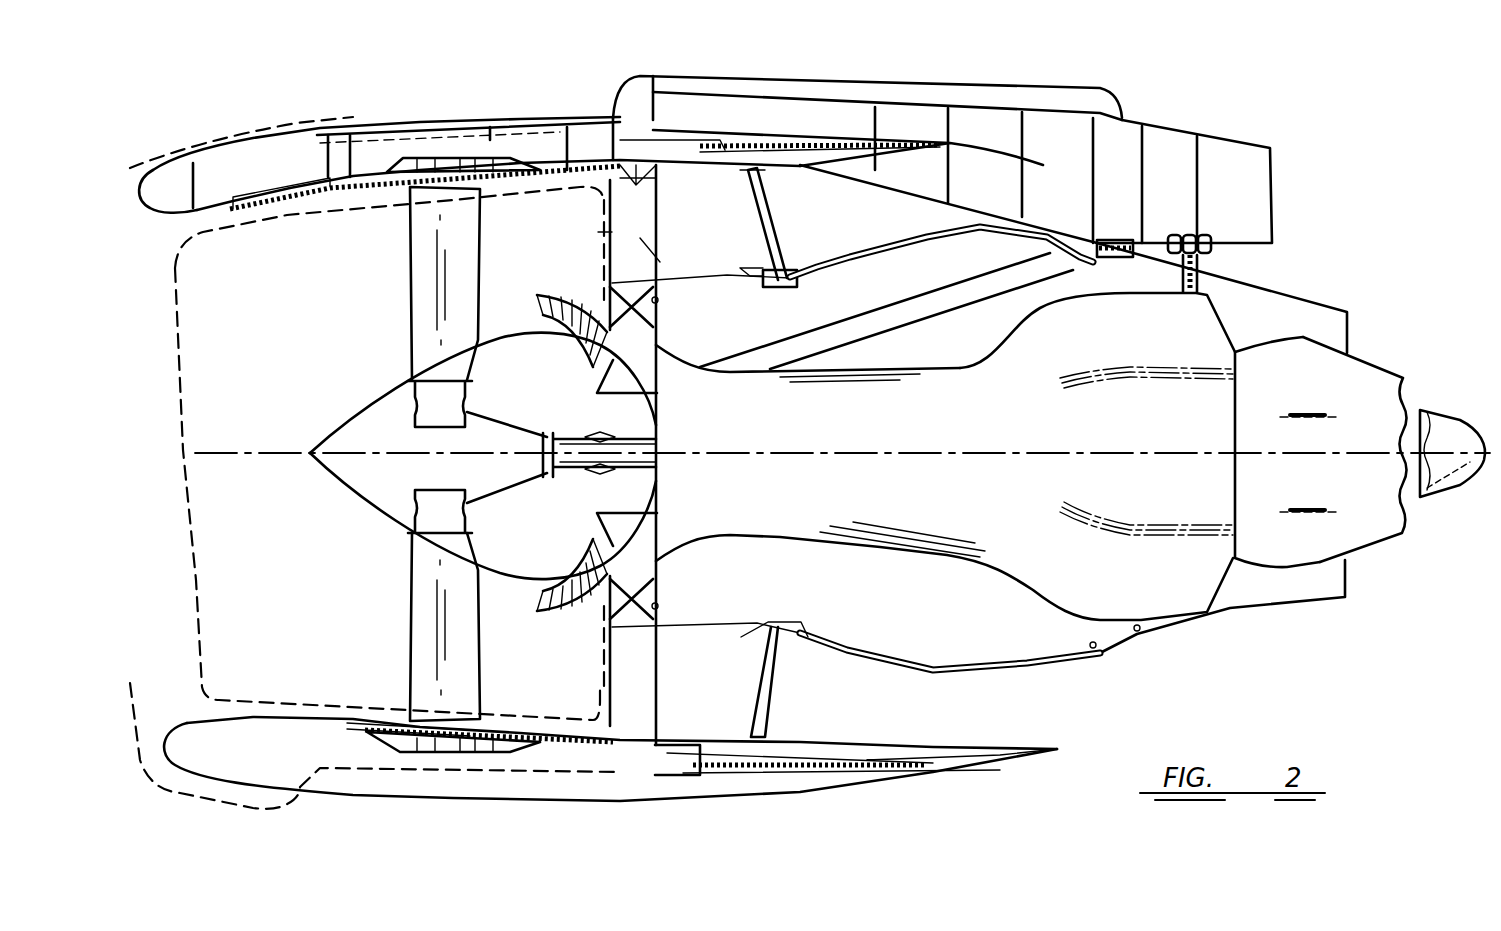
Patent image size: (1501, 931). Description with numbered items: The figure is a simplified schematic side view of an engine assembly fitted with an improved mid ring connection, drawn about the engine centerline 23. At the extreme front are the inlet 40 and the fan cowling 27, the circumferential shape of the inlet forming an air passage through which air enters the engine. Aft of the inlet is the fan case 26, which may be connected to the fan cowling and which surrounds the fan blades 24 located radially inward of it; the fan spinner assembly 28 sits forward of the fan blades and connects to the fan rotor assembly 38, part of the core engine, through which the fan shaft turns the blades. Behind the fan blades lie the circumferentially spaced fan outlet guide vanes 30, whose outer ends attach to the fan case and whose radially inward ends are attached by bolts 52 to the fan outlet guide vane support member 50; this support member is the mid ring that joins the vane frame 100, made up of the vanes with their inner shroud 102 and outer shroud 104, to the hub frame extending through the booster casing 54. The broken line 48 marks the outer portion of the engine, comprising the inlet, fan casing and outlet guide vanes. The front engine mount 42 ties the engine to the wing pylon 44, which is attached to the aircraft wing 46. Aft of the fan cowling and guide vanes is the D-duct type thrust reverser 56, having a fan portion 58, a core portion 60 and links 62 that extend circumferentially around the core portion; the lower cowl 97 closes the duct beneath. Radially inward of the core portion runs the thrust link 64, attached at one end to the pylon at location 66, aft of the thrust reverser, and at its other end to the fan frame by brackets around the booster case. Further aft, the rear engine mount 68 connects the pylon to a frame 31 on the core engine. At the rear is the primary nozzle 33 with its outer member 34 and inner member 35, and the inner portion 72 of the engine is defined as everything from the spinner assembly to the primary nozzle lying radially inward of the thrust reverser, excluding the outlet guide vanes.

The engine centerline axis 23 is at (290, 457).
The fan blades 24 is at (422, 283).
The fan case 26 is at (390, 182).
The fan cowling 27 is at (383, 128).
The fan spinner assembly 28 is at (353, 410).
The fan outlet guide vanes 30 is at (638, 247).
The frame 31 is at (1204, 327).
The primary nozzle 33 is at (1263, 389).
The outer member 34 is at (1325, 306).
The inner member 35 is at (1359, 380).
The fan rotor assembly 38 is at (420, 427).
The inlet 40 is at (255, 178).
The front engine mount 42 is at (640, 160).
The wing pylon 44 is at (1177, 153).
The aircraft wing 46 is at (1057, 103).
The broken line 48 is at (597, 192).
The fan outlet guide vane support member 50 is at (660, 306).
The bolts 52 is at (745, 291).
The booster casing 54 is at (663, 353).
The D-duct type thrust reverser 56 is at (778, 733).
The fan portion 58 is at (767, 172).
The core portion 60 is at (890, 252).
The links 62 is at (752, 199).
The thrust link 64 is at (853, 333).
The location 66 is at (1122, 240).
The rear engine mount 68 is at (1197, 261).
The inner portion 72 is at (888, 619).
The lower nacelle cowl 97 is at (790, 790).
The vane frame 100 is at (603, 236).
The inner shroud 102 is at (610, 285).
The outer shroud 104 is at (637, 178).